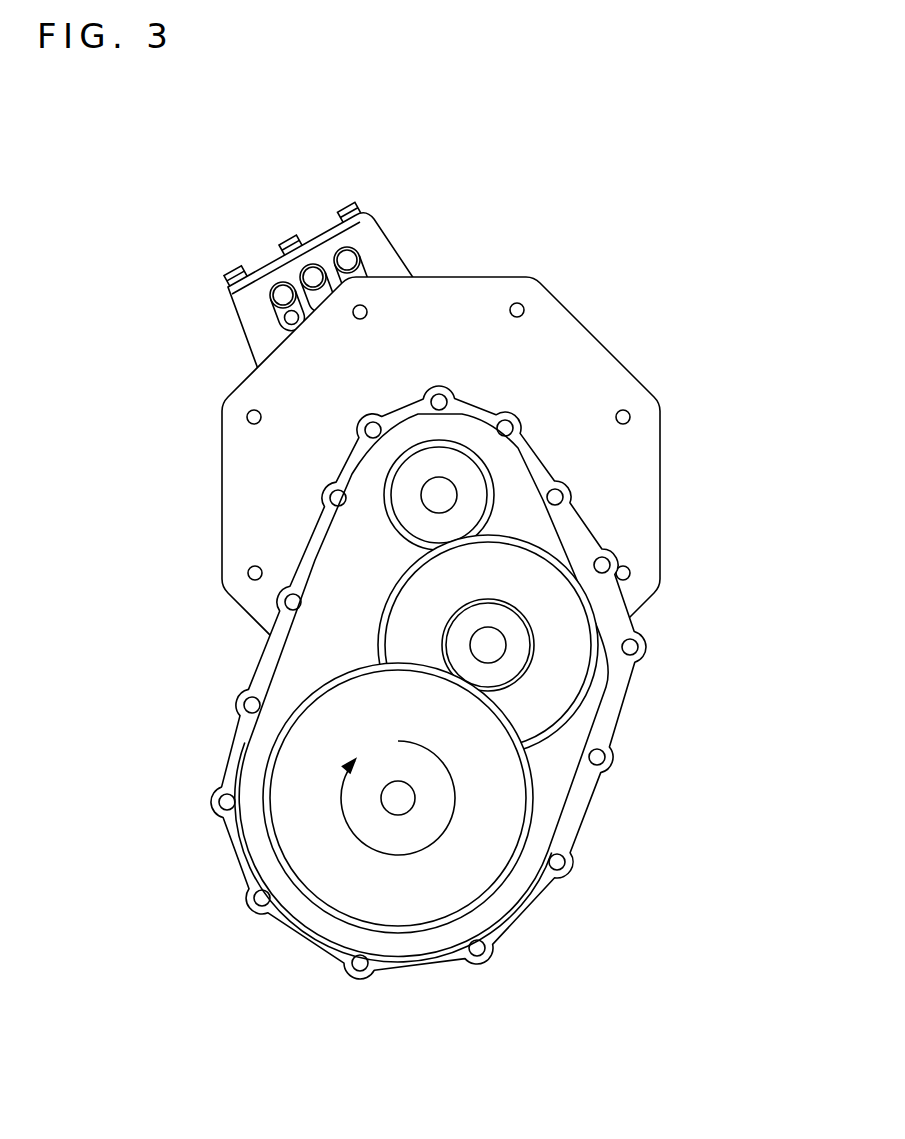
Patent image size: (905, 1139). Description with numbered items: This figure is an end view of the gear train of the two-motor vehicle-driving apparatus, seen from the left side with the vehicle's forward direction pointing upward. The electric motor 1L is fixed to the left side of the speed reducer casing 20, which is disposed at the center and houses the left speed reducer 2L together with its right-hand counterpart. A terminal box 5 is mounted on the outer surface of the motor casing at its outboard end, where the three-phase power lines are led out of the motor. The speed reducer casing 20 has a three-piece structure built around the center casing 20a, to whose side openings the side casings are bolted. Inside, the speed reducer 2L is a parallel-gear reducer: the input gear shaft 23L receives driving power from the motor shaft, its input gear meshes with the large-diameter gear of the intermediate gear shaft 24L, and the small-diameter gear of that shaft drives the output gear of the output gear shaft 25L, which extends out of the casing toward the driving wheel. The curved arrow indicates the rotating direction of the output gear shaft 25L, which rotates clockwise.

The electric motor 1L is at (505, 616).
The speed reducer 2L is at (678, 747).
The terminal box 5 is at (362, 240).
The speed reducer casing 20 is at (480, 747).
The center casing 20a is at (423, 955).
The input gear shaft 23L is at (500, 492).
The intermediate gear shaft 24L is at (593, 683).
The output gear shaft 25L is at (495, 890).